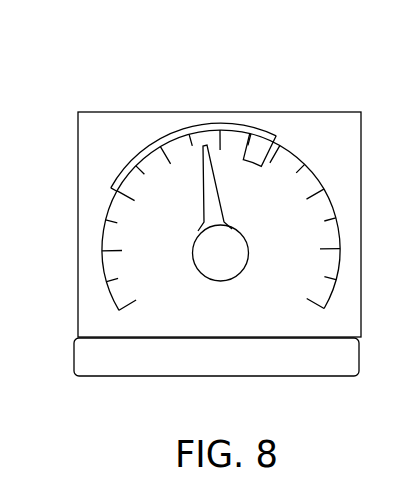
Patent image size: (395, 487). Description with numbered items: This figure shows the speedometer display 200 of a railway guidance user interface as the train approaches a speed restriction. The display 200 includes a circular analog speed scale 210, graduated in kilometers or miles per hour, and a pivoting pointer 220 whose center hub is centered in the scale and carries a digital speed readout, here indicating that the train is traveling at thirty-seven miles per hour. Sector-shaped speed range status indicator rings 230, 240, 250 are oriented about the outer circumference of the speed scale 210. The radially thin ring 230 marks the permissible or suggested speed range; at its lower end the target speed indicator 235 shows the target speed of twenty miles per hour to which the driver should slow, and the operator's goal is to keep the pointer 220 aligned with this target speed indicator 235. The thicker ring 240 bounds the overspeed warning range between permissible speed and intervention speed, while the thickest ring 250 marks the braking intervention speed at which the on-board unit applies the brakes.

The speedometer display 200 is at (61, 139).
The analog speed scale 210 is at (108, 292).
The pivoting pointer 220 is at (146, 226).
The permissible speed range ring 230 is at (148, 147).
The target speed indicator 235 is at (110, 188).
The overspeed warning ring 240 is at (203, 144).
The braking intervention ring 250 is at (230, 124).